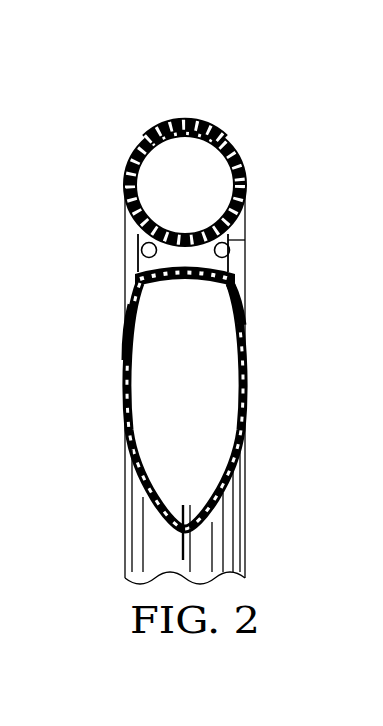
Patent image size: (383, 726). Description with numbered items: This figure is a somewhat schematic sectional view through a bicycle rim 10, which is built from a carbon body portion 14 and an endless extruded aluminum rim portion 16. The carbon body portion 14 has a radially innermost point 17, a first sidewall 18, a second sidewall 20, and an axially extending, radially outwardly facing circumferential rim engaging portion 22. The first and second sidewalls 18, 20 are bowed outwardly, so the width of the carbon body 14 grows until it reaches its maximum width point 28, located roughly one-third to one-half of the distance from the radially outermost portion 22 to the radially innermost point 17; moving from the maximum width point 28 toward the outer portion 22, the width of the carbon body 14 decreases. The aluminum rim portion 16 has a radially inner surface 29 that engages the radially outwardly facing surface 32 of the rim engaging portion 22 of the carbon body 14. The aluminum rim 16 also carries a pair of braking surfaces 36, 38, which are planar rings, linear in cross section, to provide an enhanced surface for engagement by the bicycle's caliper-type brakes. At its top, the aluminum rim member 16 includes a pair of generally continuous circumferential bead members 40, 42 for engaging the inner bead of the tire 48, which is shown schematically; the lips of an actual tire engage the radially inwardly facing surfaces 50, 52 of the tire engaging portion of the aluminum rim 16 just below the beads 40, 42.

The rim 10 is at (137, 113).
The carbon body portion 14 is at (118, 440).
The extruded aluminum rim portion 16 is at (128, 252).
The radially innermost point 17 is at (184, 536).
The first sidewall 18 is at (237, 466).
The second sidewall 20 is at (140, 464).
The rim engaging portion 22 is at (218, 163).
The maximum width point 28 is at (125, 382).
The radially inner surface 29 is at (226, 286).
The radially outwardly facing surface 32 is at (127, 324).
The braking surface 36 is at (233, 254).
The braking surface 38 is at (135, 274).
The circumferential bead member 40 is at (243, 216).
The circumferential bead member 42 is at (137, 238).
The tire 48 is at (183, 122).
The radially inwardly facing surface 50 is at (140, 247).
The radially inwardly facing surface 52 is at (232, 248).